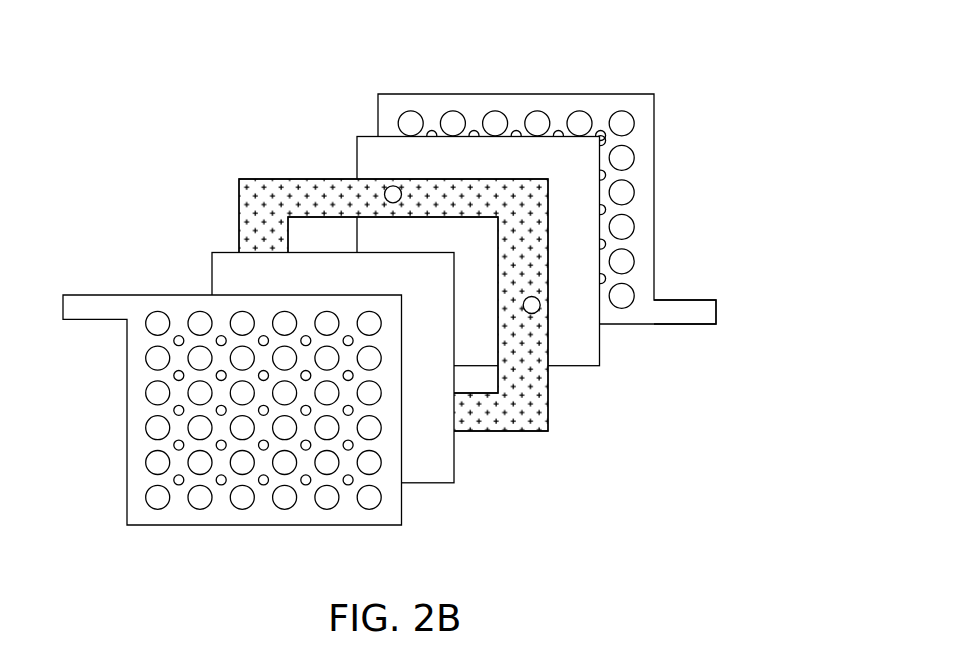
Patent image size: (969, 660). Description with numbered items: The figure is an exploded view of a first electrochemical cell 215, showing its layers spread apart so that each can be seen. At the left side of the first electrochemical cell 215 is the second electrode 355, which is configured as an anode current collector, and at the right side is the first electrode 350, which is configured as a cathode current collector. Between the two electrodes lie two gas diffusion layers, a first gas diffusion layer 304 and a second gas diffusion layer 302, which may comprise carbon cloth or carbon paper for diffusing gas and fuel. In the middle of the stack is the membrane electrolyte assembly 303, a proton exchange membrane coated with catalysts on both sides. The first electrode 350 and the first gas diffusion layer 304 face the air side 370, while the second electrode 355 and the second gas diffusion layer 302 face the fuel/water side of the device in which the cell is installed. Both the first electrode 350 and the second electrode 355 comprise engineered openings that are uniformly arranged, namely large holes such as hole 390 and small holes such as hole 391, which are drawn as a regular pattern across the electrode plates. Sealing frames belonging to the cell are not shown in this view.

The first electrochemical cell 215 is at (426, 296).
The second gas diffusion layer 302 is at (192, 262).
The membrane electrolyte assembly 303 is at (560, 411).
The first gas diffusion layer 304 is at (345, 144).
The first electrode 350 is at (716, 312).
The second electrode 355 is at (281, 432).
The air side 370 is at (688, 190).
The large hole 390 is at (157, 497).
The small hole 391 is at (180, 485).